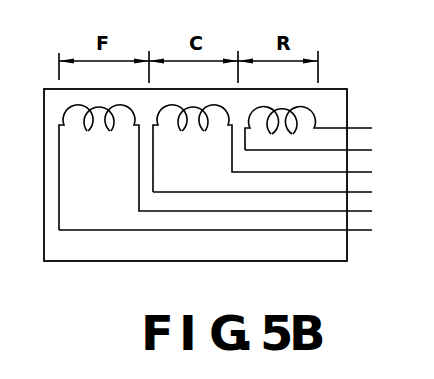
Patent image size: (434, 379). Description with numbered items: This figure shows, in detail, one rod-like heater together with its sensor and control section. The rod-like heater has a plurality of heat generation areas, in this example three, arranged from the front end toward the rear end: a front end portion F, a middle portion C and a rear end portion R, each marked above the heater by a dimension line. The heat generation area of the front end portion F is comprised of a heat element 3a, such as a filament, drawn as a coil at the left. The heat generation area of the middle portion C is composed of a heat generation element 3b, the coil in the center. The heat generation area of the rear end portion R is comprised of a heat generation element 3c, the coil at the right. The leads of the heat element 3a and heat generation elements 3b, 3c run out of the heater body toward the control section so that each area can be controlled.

The heat element 3a is at (97, 240).
The heat generation element 3b is at (168, 196).
The heat generation element 3c is at (256, 154).